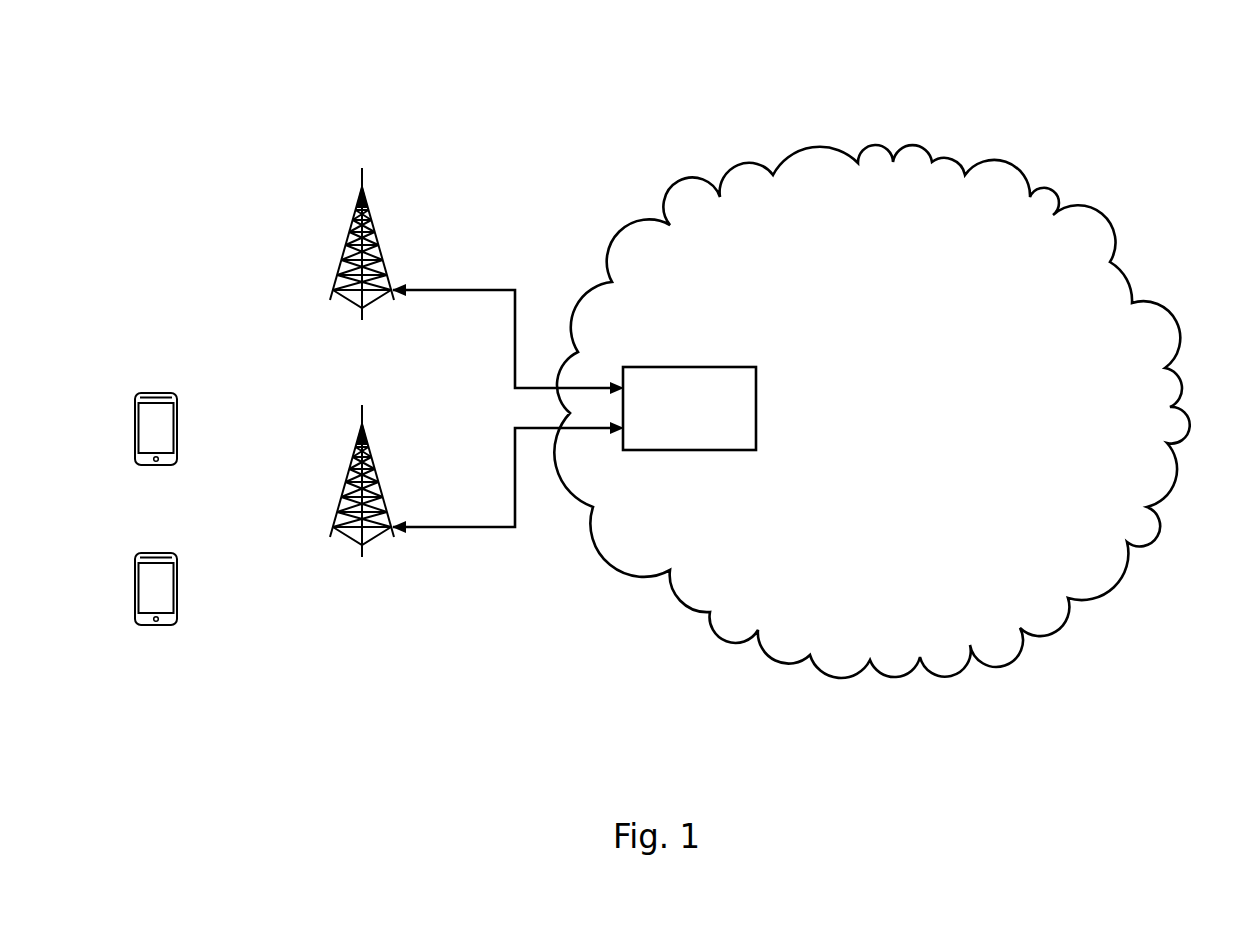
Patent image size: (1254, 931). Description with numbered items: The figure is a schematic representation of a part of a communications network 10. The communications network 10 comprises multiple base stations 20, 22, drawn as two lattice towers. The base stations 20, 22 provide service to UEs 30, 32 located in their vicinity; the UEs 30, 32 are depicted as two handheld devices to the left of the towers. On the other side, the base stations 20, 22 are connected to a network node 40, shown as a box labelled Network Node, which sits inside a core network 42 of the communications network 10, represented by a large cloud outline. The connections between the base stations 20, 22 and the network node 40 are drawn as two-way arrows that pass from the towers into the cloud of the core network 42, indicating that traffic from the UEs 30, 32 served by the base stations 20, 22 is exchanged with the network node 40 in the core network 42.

The communications network 10 is at (1083, 101).
The base station 20 is at (373, 240).
The base station 22 is at (373, 477).
The UE 30 is at (175, 428).
The UE 32 is at (175, 593).
The network node 40 is at (757, 402).
The core network 42 is at (1108, 227).